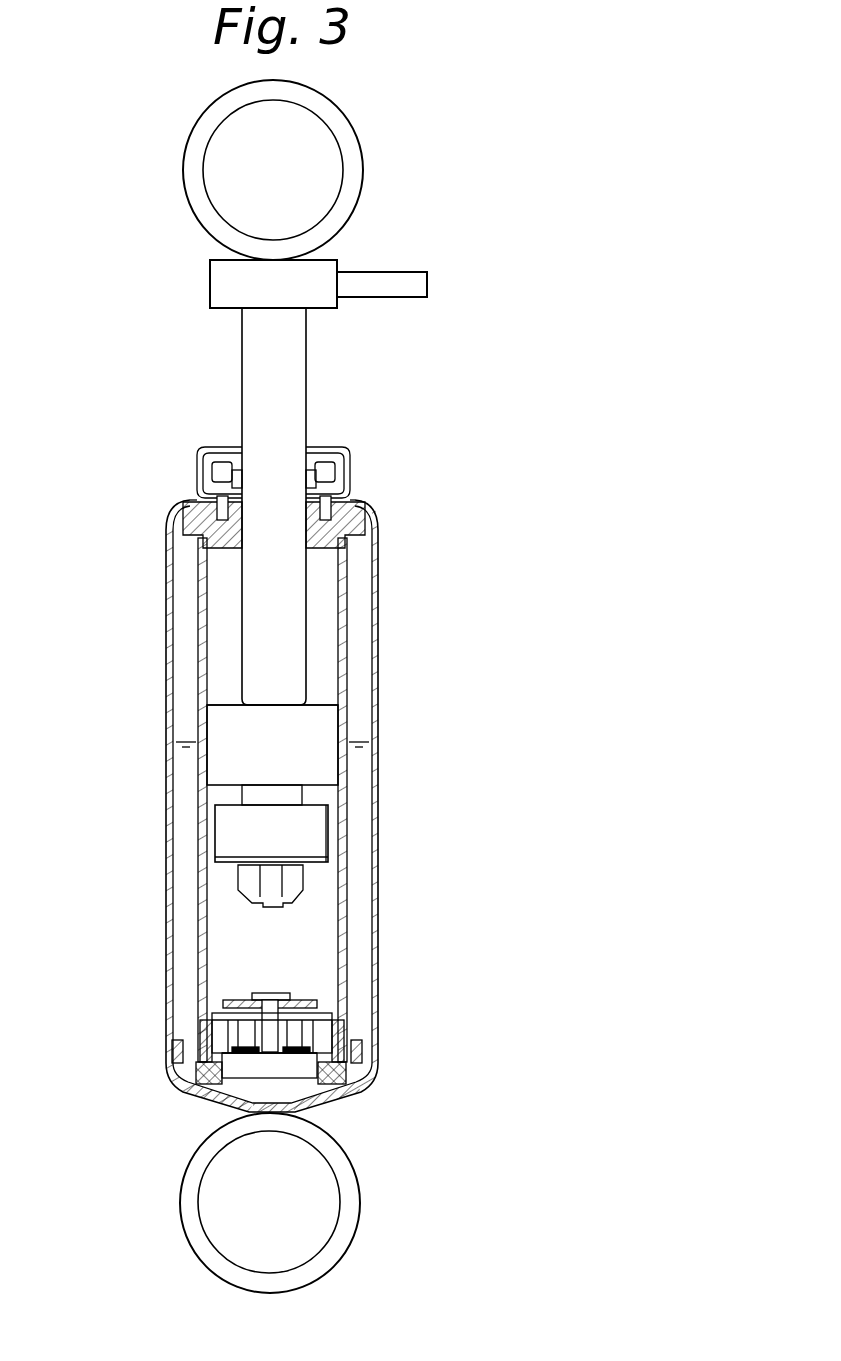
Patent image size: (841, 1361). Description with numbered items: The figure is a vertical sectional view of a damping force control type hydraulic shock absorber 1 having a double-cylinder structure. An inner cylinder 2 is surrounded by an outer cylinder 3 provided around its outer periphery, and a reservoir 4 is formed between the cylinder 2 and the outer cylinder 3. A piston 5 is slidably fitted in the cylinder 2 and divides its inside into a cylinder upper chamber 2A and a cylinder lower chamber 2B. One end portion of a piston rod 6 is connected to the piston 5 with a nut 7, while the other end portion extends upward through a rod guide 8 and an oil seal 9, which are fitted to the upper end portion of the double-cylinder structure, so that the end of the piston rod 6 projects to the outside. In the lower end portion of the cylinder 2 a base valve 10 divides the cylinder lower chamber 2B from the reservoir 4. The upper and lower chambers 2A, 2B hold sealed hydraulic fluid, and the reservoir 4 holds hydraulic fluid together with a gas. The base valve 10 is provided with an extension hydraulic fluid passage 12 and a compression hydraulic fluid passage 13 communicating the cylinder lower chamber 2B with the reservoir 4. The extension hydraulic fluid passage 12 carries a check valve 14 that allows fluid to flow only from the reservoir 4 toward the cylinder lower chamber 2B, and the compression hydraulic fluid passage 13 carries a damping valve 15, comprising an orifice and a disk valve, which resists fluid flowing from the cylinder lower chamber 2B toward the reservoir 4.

The damping force control type hydraulic shock absorber 1 is at (519, 198).
The cylinder 2 is at (345, 567).
The cylinder upper chamber 2A is at (227, 677).
The cylinder lower chamber 2B is at (227, 965).
The outer cylinder 3 is at (380, 610).
The reservoir 4 is at (187, 588).
The piston 5 is at (310, 728).
The piston rod 6 is at (293, 345).
The nut 7 is at (290, 882).
The rod guide 8 is at (342, 500).
The oil seal 9 is at (333, 448).
The base valve 10 is at (335, 1030).
The extension hydraulic fluid passage 12 is at (200, 1072).
The compression hydraulic fluid passage 13 is at (350, 1073).
The check valve 14 is at (207, 1032).
The damping valve 15 is at (323, 1095).